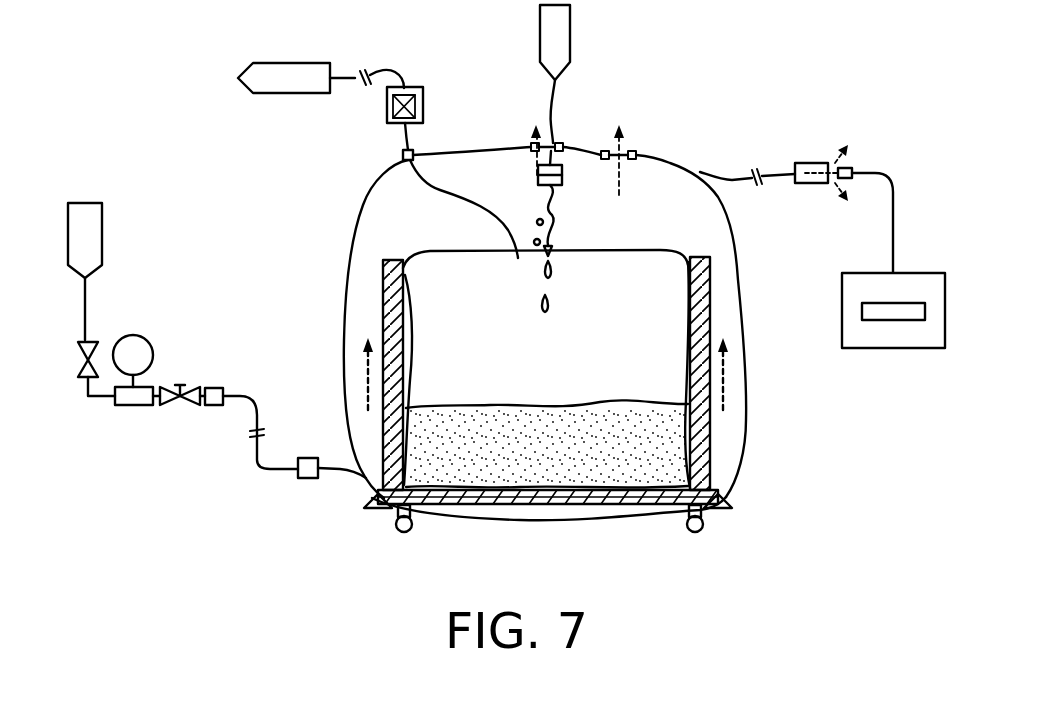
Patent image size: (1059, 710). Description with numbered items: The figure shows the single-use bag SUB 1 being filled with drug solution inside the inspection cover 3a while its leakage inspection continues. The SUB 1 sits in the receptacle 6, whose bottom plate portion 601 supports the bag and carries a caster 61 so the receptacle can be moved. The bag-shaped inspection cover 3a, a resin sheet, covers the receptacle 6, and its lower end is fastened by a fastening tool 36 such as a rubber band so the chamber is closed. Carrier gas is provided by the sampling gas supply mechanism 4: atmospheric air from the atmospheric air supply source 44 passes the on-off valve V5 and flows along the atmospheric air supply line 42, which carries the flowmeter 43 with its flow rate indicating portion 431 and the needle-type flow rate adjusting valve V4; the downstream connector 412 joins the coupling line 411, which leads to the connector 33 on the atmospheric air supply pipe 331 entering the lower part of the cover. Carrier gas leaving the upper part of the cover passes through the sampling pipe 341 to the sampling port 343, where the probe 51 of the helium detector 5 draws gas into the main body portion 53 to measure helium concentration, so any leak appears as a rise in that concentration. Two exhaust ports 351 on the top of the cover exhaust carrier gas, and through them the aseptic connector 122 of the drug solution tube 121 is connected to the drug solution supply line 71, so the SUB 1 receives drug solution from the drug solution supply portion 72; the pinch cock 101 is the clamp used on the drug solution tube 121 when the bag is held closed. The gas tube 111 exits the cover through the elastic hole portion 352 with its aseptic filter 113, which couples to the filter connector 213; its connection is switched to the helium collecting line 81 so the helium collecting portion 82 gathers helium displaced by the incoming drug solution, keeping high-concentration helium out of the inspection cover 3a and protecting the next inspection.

The SUB 1 is at (683, 323).
The inspection cover 3a is at (692, 164).
The sampling gas supply mechanism 4 is at (224, 194).
The helium detector 5 is at (939, 158).
The receptacle 6 is at (710, 280).
The connector 33 is at (305, 458).
The fastening tool 36 is at (477, 505).
The atmospheric air supply line 42 is at (100, 398).
The flowmeter 43 is at (133, 405).
The atmospheric air supply source 44 is at (103, 228).
The probe 51 is at (813, 183).
The main body portion 53 is at (893, 349).
The caster 61 is at (704, 525).
The drug solution supply line 71 is at (549, 93).
The drug solution supply portion 72 is at (572, 33).
The helium collecting line 81 is at (352, 76).
The helium collecting portion 82 is at (283, 63).
The pinch cock 101 is at (560, 239).
The gas tube 111 is at (432, 190).
The aseptic filter 113 is at (423, 107).
The drug solution tube 121 is at (556, 196).
The aseptic connector 122 is at (538, 174).
The filter connector 213 is at (415, 87).
The atmospheric air supply pipe 331 is at (346, 469).
The sampling pipe 341 is at (776, 172).
The sampling port 343 is at (818, 163).
The exhaust ports 351 is at (604, 150).
The elastic hole portion 352 is at (403, 153).
The coupling line 411 is at (272, 470).
The connector 412 is at (216, 388).
The flow rate indicating portion 431 is at (148, 340).
The bottom plate portion 601 is at (538, 508).
The flow rate adjusting valve V4 is at (181, 403).
The on-off valve V5 is at (93, 340).